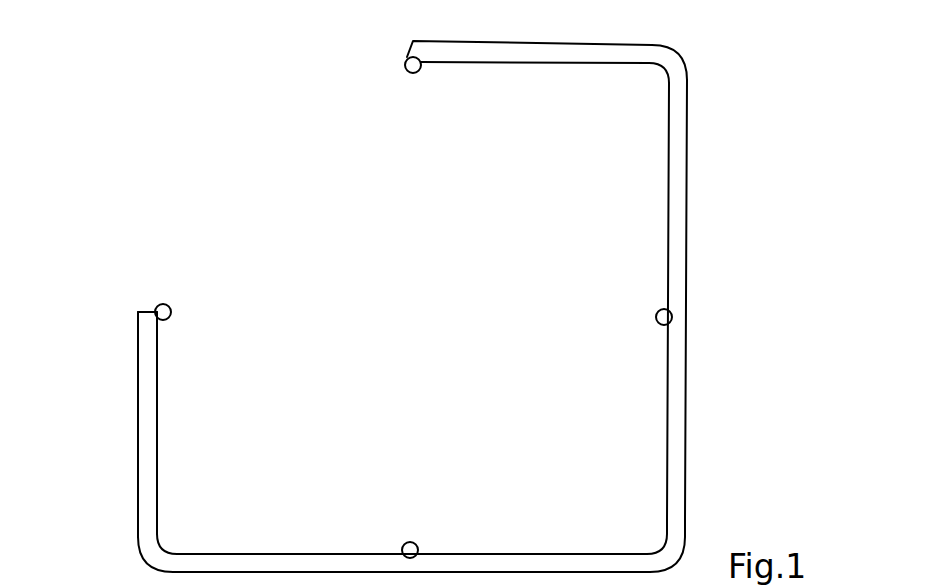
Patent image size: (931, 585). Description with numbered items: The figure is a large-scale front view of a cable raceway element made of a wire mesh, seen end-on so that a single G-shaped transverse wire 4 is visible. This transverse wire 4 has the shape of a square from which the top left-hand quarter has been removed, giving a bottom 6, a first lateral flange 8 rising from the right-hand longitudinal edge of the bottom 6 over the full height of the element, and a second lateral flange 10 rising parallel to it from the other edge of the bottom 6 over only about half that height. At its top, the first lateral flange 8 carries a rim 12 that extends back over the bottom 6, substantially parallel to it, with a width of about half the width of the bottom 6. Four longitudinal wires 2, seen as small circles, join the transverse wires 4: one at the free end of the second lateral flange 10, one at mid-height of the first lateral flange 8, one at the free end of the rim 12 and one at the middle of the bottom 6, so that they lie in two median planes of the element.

The longitudinal wire 2 is at (405, 78).
The transverse wire 4 is at (673, 550).
The bottom 6 is at (517, 565).
The first lateral flange 8 is at (680, 406).
The second lateral flange 10 is at (146, 421).
The rim 12 is at (487, 57).